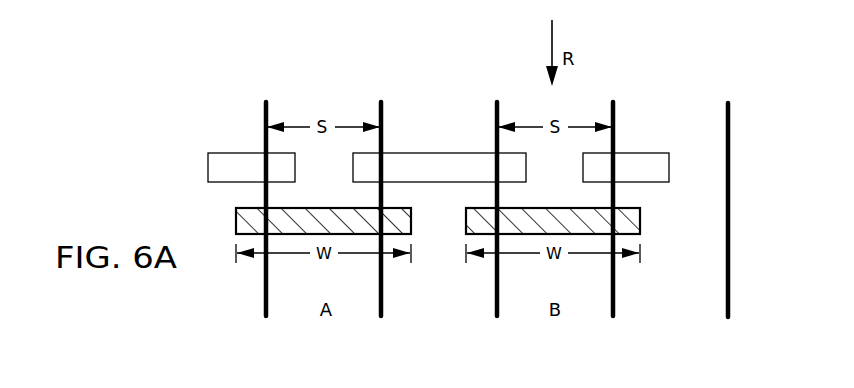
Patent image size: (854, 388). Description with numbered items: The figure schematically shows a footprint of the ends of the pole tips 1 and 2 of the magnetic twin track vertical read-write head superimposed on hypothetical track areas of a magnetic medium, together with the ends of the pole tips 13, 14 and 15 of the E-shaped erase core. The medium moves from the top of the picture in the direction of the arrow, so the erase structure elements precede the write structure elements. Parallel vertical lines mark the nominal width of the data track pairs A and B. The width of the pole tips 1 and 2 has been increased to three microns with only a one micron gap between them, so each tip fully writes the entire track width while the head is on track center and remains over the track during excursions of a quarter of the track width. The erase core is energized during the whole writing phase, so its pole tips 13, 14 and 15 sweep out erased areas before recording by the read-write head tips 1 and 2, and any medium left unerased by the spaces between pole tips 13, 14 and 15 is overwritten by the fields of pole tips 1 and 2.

The pole tip 1 is at (240, 220).
The pole tip 2 is at (641, 222).
The pole tip of the E-shaped erase core 13 is at (213, 158).
The pole tip of the E-shaped erase core 14 is at (437, 153).
The pole tip of the E-shaped erase core 15 is at (650, 153).